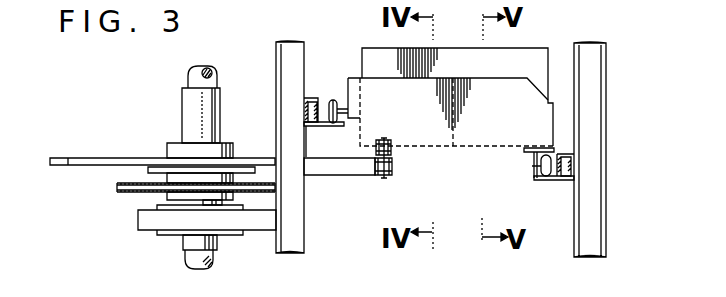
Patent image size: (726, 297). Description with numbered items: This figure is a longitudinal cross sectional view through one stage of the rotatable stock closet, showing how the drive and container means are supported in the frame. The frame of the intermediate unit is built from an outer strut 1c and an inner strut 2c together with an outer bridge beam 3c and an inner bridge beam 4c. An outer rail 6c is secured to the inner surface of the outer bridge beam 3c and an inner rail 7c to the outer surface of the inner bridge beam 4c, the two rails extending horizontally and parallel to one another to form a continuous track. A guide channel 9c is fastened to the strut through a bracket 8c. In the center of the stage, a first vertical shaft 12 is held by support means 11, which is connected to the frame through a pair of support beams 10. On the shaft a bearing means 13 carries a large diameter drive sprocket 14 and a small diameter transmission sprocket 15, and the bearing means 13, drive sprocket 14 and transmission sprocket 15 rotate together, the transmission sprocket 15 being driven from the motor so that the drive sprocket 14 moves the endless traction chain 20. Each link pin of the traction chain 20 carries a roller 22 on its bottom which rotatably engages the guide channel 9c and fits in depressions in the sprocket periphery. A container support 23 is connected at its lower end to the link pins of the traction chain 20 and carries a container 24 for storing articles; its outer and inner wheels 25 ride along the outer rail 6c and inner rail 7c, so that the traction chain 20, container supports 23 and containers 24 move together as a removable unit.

The outer strut 1c is at (597, 100).
The inner strut 2c is at (279, 58).
The outer bridge beam 3c is at (565, 182).
The inner bridge beam 4c is at (306, 94).
The outer rail 6c is at (538, 181).
The inner rail 7c is at (325, 127).
The bracket 8c is at (340, 177).
The guide channel 9c is at (384, 178).
The support beam 10 is at (140, 218).
The support means 11 is at (172, 235).
The first vertical shaft 12 is at (192, 74).
The bearing means 13 is at (176, 143).
The drive sprocket 14 is at (117, 158).
The transmission sprocket 15 is at (117, 187).
The endless traction chain 20 is at (394, 152).
The roller 22 is at (395, 170).
The container support 23 is at (455, 147).
The container 24 is at (525, 30).
The wheel 25 is at (332, 99).